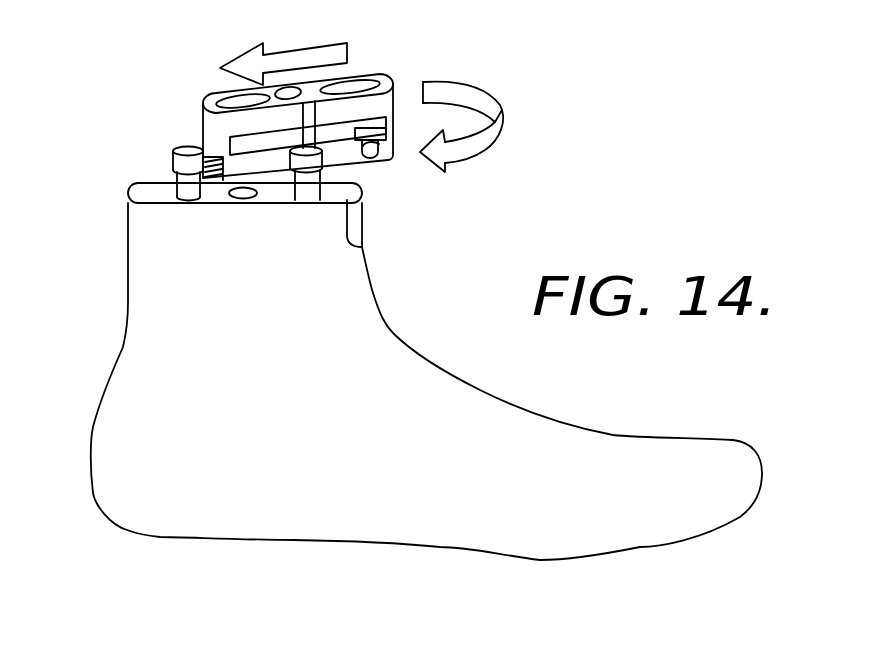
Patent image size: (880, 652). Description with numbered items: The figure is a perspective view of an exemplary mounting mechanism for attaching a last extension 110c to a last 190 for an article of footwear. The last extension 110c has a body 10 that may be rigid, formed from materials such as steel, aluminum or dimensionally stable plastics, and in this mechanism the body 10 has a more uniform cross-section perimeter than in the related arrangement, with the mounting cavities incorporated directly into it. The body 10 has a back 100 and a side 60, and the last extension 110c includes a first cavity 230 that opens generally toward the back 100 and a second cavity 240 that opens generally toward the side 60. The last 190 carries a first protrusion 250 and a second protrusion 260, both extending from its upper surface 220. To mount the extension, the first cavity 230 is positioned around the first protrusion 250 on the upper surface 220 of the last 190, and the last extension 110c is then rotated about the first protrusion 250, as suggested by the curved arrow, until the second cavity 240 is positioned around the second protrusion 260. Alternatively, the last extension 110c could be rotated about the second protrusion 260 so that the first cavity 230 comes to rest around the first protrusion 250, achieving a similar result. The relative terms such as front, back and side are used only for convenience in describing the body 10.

The body 10 is at (261, 94).
The side 60 is at (350, 107).
The back 100 is at (203, 115).
The last extension 110c is at (300, 112).
The last 190 is at (542, 416).
The upper surface 220 is at (145, 193).
The first cavity 230 is at (215, 155).
The second cavity 240 is at (368, 150).
The first protrusion 250 is at (172, 167).
The second protrusion 260 is at (364, 247).